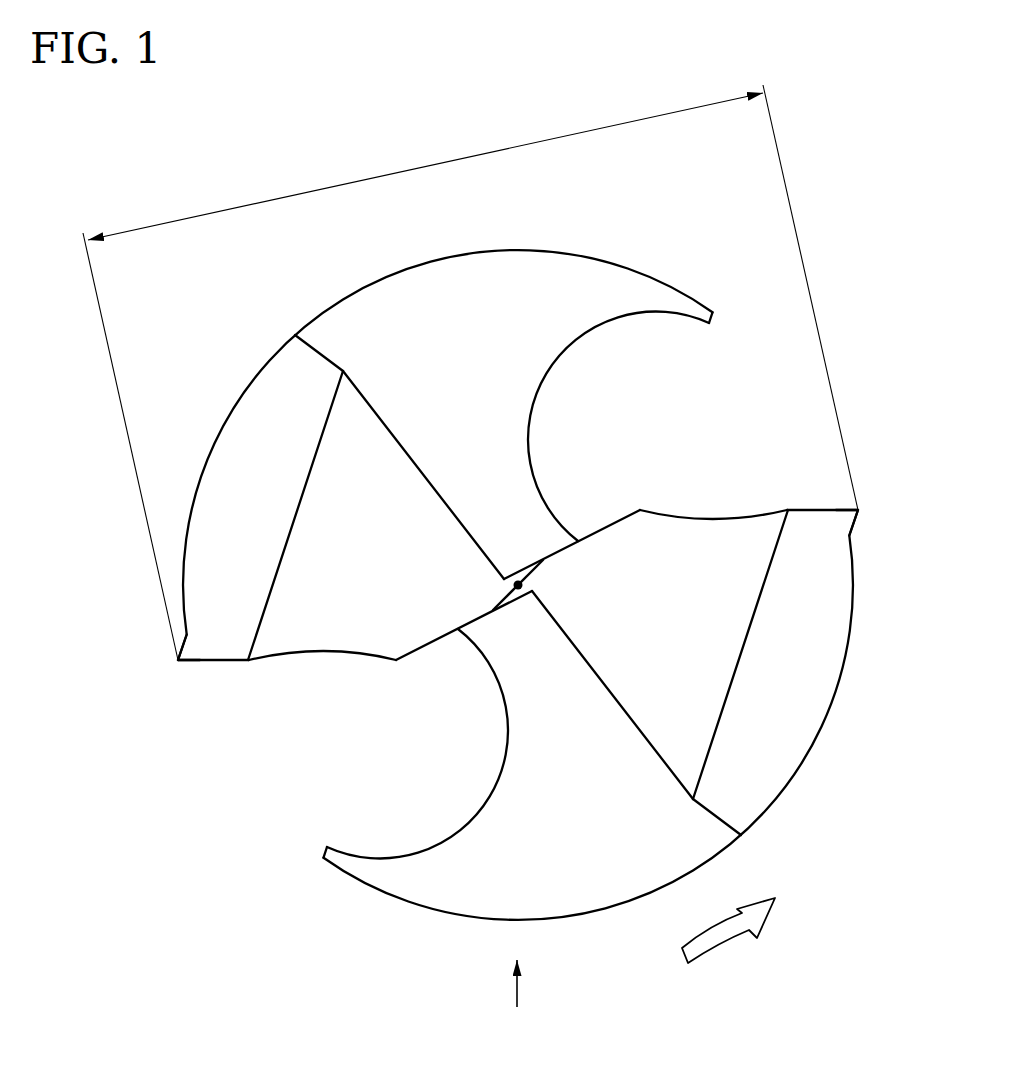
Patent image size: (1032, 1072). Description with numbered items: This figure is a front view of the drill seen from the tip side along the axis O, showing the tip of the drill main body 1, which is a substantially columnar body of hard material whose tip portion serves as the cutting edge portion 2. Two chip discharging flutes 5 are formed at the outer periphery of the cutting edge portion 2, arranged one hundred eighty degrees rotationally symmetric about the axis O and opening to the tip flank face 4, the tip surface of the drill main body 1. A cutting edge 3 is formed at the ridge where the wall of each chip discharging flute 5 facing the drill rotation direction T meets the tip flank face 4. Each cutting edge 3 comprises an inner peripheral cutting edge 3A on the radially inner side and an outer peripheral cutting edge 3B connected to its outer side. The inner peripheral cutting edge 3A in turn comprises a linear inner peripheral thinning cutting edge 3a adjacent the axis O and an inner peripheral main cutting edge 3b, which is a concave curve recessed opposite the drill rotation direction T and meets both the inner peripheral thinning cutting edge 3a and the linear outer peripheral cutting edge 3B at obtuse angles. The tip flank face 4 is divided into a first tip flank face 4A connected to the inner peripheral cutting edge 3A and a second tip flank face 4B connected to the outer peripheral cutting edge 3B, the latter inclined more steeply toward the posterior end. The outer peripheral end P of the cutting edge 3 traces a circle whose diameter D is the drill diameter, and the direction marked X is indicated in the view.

The drill main body 1 is at (510, 540).
The cutting edge portion 2 is at (510, 585).
The cutting edge 3 is at (518, 586).
The inner peripheral cutting edge 3A is at (518, 587).
The outer peripheral cutting edge 3B is at (648, 415).
The inner peripheral thinning cutting edge 3a is at (608, 520).
The inner peripheral main cutting edge 3b is at (618, 461).
The tip flank face 4 is at (517, 585).
The first tip flank face 4A is at (353, 513).
The second tip flank face 4B is at (248, 498).
The chip discharging flute 5 is at (657, 372).
The axis O is at (512, 587).
The outer peripheral end P is at (177, 662).
The diameter D is at (470, 372).
The reference direction X is at (515, 1002).
The drill rotation direction T is at (728, 941).